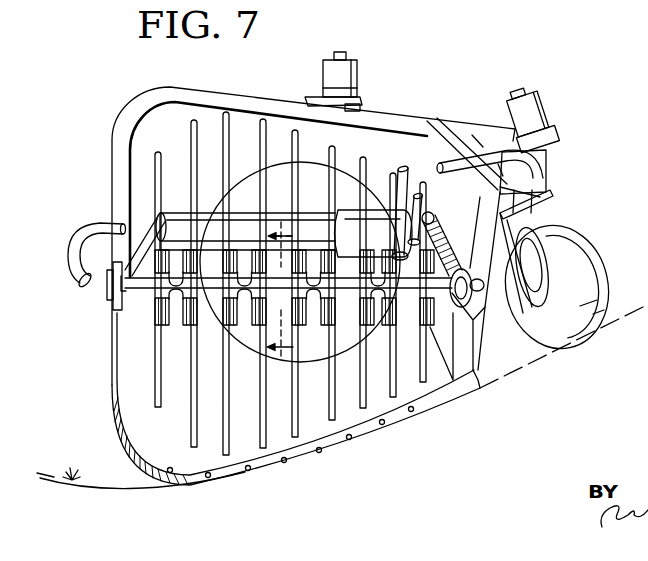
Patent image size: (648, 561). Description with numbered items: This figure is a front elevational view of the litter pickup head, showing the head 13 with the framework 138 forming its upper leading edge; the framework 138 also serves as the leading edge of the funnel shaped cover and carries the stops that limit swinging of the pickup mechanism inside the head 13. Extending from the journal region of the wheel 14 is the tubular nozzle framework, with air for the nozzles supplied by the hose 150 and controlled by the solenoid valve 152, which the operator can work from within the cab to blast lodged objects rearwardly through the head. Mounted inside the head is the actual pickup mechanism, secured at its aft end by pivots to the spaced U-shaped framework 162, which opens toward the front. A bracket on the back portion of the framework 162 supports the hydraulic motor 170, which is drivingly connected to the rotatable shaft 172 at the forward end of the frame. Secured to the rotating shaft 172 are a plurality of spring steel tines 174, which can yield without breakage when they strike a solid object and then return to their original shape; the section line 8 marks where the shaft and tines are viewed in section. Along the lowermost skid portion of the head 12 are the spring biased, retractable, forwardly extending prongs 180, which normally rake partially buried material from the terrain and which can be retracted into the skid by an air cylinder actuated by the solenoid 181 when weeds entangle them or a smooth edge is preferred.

The section line 8- 8 is at (280, 291).
The head 12 is at (372, 432).
The head 13 is at (367, 107).
The wheel 14 is at (583, 263).
The framework 138 is at (288, 104).
The hose 150 is at (83, 235).
The solenoid valve 152 is at (531, 113).
The U-shaped framework 162 is at (178, 212).
The hydraulic motor 170 is at (378, 228).
The rotatable shaft 172 is at (143, 291).
The tines 174 is at (158, 400).
The prongs 180 is at (249, 470).
The solenoid 181 is at (350, 66).